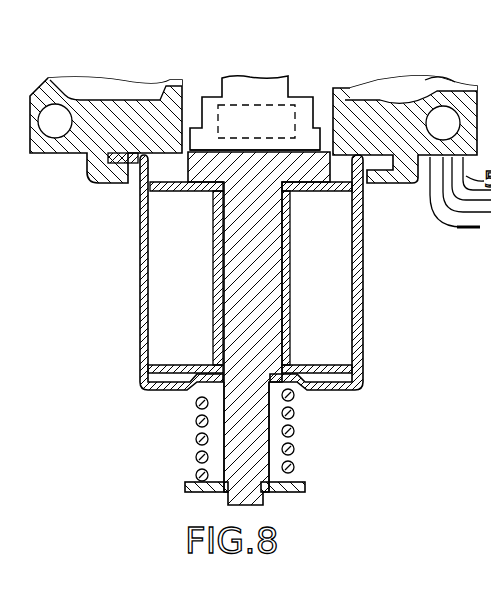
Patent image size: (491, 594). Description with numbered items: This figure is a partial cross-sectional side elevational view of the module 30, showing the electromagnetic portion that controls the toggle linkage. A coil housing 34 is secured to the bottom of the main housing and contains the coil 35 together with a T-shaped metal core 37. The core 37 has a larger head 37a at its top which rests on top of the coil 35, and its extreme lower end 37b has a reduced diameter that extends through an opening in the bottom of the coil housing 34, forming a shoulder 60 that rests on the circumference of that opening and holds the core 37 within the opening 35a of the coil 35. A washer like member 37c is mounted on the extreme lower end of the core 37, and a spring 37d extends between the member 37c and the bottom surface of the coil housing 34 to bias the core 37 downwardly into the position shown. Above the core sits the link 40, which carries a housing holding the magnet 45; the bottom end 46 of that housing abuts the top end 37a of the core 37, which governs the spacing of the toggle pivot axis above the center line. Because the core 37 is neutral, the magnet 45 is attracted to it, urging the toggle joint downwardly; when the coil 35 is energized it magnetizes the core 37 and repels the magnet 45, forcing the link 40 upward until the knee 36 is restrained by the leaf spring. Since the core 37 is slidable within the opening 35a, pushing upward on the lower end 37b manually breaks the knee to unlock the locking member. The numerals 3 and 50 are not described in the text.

The module 30 is at (253, 92).
The knee 36 is at (449, 72).
The link 40 is at (302, 76).
The magnet 45 is at (226, 106).
The bottom end of housing 46 is at (245, 148).
The core 37 is at (272, 281).
The head of core 37a is at (207, 186).
The lower end of core 37b is at (257, 430).
The washer like member 37c is at (302, 479).
The spring 37d is at (295, 433).
The coil 35 is at (327, 221).
The opening of coil 35a is at (222, 292).
The coil housing 34 is at (140, 311).
The shoulder 60 is at (143, 358).
The tubing 3 is at (460, 230).
The conduit 50 is at (490, 525).